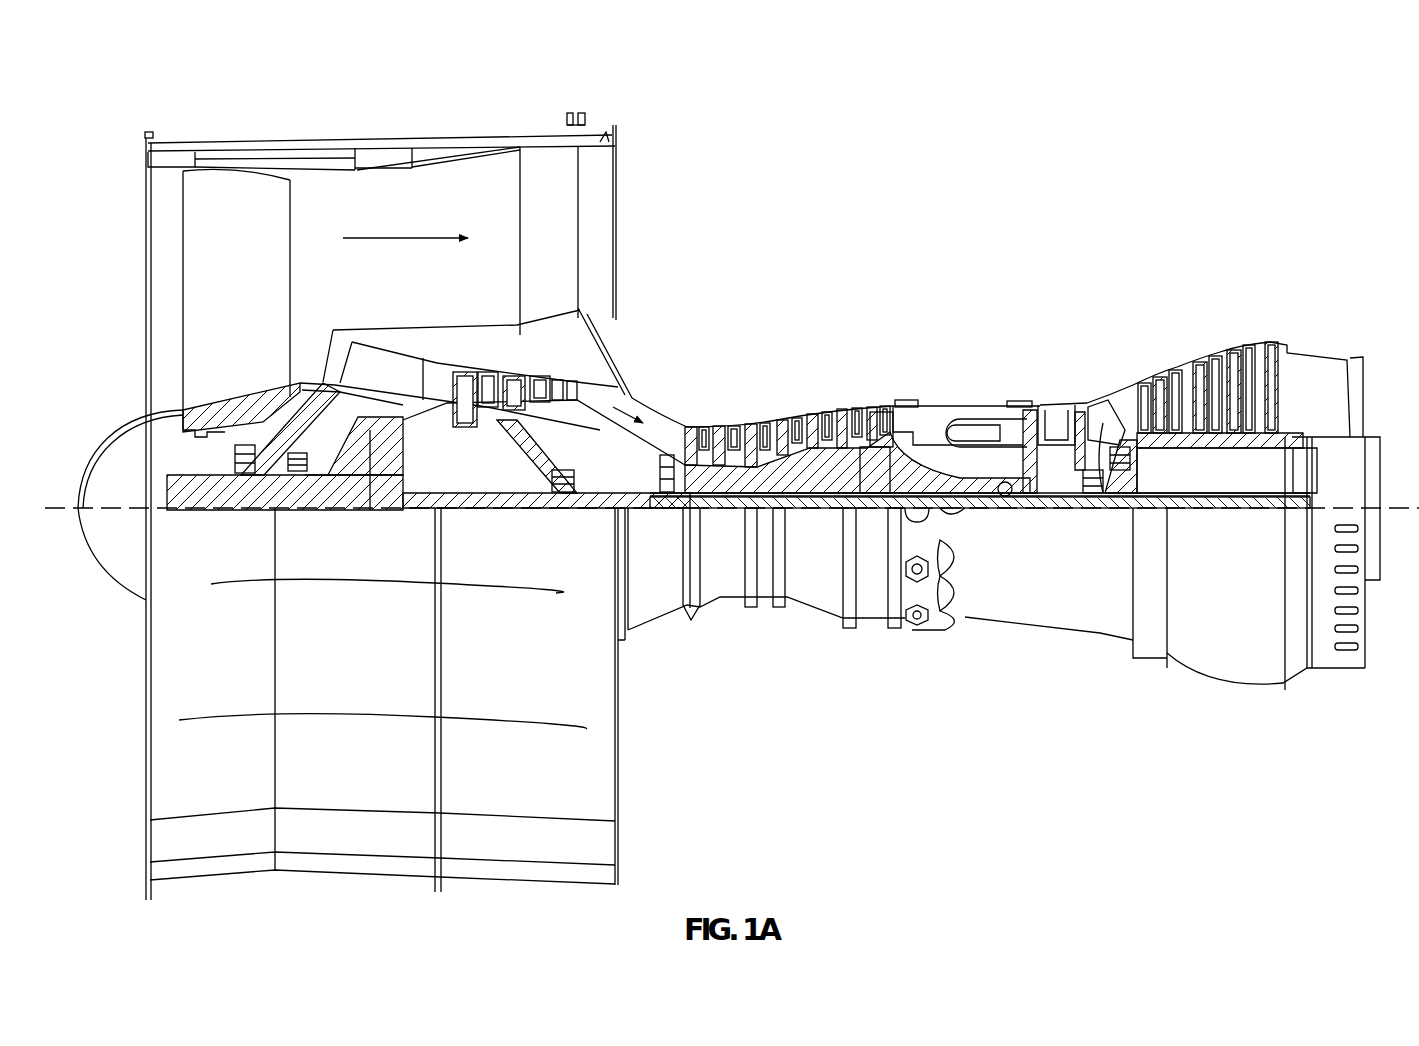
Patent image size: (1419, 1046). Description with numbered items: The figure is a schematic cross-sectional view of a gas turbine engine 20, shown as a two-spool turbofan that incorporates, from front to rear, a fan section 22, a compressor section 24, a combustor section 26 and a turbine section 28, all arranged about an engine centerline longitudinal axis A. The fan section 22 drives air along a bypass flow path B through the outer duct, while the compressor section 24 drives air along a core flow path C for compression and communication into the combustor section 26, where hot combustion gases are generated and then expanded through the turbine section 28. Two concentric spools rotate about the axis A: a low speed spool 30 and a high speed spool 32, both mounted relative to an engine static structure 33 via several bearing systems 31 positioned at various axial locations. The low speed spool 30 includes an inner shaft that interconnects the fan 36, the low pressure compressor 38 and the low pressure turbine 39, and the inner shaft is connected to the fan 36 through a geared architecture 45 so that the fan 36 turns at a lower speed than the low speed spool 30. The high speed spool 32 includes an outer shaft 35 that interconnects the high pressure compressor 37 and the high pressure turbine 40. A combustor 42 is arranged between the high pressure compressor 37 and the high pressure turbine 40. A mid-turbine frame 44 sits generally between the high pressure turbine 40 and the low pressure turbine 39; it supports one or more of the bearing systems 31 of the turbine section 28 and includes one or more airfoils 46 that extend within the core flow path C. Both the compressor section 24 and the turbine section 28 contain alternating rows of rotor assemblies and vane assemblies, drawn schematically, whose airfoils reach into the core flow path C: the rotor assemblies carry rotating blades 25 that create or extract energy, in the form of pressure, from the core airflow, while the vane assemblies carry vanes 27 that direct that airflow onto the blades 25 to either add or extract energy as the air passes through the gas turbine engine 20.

The gas turbine engine 20 is at (1250, 108).
The fan section 22 is at (258, 132).
The compressor section 24 is at (702, 325).
The blades 25 is at (463, 373).
The combustor section 26 is at (968, 360).
The vanes 27 is at (490, 374).
The turbine section 28 is at (1157, 300).
The low speed spool 30 is at (834, 514).
The bearing systems 31 is at (268, 490).
The high speed spool 32 is at (890, 458).
The engine static structure 33 is at (873, 630).
The outer shaft 35 is at (1005, 497).
The fan 36 is at (210, 257).
The high pressure compressor 37 is at (793, 475).
The low pressure compressor 38 is at (592, 330).
The low pressure turbine 39 is at (1217, 363).
The high pressure turbine 40 is at (1058, 403).
The combustor 42 is at (970, 430).
The mid-turbine frame 44 is at (1107, 393).
The geared architecture 45 is at (380, 480).
The airfoils 46 is at (1125, 440).
The engine centerline longitudinal axis A is at (1385, 505).
The bypass flow path B is at (405, 236).
The core flow path C is at (647, 400).